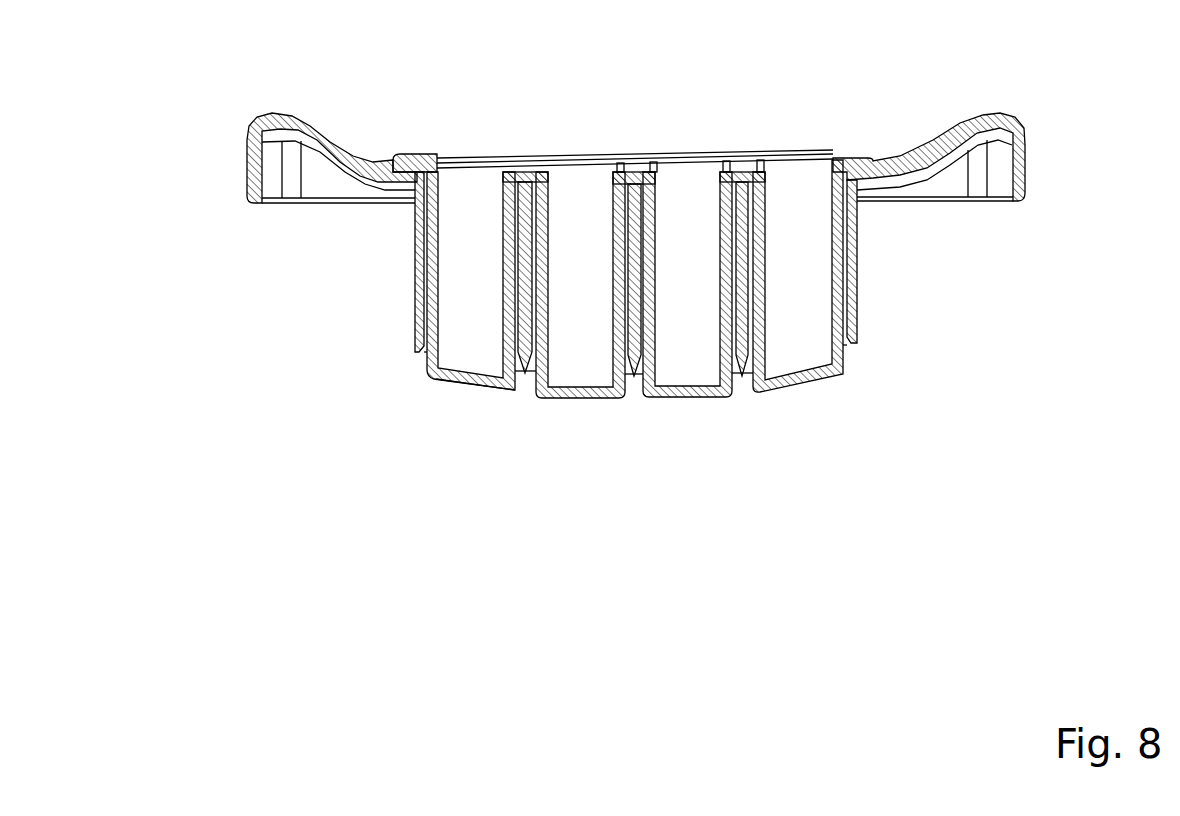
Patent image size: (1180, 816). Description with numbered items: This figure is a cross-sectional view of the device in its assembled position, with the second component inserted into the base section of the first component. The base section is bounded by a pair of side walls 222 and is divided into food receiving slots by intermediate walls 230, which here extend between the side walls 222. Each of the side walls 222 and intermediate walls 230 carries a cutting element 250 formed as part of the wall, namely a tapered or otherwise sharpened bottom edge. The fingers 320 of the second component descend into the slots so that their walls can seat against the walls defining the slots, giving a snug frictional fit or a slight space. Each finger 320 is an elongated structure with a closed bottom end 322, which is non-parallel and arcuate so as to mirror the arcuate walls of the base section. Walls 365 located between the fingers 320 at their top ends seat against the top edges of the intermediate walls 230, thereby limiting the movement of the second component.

The side wall 222 is at (423, 245).
The intermediate wall 230 is at (525, 288).
The cutting element 250 is at (418, 350).
The finger 320 is at (463, 318).
The closed bottom end 322 is at (443, 378).
The wall 365 is at (527, 172).